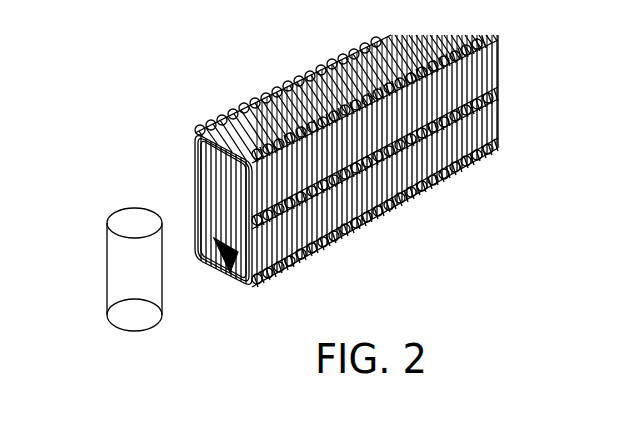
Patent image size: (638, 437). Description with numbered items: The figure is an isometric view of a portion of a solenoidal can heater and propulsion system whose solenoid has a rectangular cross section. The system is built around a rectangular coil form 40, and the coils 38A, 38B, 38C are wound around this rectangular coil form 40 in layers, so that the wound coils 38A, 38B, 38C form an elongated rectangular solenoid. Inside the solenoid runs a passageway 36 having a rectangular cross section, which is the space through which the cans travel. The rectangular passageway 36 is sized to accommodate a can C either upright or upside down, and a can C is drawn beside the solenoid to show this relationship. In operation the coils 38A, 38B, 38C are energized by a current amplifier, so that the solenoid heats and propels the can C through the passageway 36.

The passageway 36 is at (311, 200).
The coil 38A is at (248, 284).
The coil 38B is at (260, 284).
The coil 38C is at (262, 280).
The rectangular coil form 40 is at (193, 157).
The can C is at (116, 266).